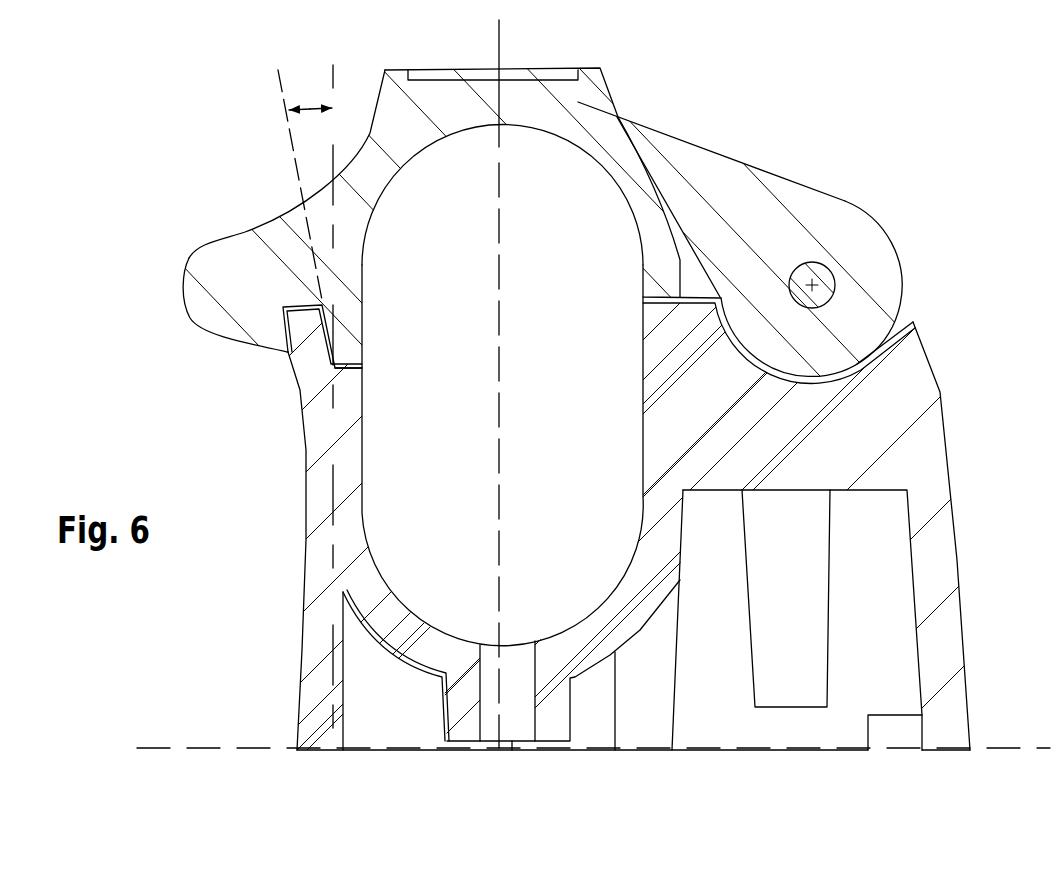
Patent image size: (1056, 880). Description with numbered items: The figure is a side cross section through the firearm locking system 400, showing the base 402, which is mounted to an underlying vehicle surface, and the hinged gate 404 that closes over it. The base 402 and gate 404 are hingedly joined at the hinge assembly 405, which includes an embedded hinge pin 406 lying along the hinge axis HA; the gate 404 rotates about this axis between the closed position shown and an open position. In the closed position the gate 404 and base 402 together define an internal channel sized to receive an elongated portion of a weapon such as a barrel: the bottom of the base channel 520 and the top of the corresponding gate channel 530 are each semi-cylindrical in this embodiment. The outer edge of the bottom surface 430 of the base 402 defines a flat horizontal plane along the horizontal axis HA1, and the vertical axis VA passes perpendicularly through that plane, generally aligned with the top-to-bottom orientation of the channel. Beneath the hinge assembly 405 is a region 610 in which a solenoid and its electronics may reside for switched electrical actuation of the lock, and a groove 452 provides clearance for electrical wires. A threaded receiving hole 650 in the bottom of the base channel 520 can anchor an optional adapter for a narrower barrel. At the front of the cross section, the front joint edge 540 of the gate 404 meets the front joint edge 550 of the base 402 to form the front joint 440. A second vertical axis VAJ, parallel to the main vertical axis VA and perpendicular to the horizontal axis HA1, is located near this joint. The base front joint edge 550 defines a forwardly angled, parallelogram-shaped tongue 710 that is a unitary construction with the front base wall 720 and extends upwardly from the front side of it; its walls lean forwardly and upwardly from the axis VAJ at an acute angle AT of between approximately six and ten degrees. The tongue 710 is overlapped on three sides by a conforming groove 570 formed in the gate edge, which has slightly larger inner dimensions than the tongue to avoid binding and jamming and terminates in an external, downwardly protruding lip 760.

The firearm locking system 400 is at (557, 440).
The base 402 is at (528, 491).
The hinged gate 404 is at (623, 104).
The hinge assembly 405 is at (861, 263).
The hinge pin 406 is at (838, 310).
The bottom surface 430 is at (691, 753).
The front opening joint 440 is at (366, 368).
The groove 452 is at (899, 738).
The base channel 520 is at (441, 620).
The gate channel 530 is at (423, 142).
The front joint edge of the gate 540 is at (366, 330).
The front joint edge of the base 550 is at (291, 383).
The groove 570 is at (297, 302).
The region 610 is at (848, 693).
The threaded receiving hole 650 is at (523, 643).
The tongue 710 is at (303, 357).
The front base wall 720 is at (305, 626).
The lip 760 is at (236, 341).
The hinge axis HA is at (815, 283).
The vertical axis VA is at (501, 30).
The vertical axis VAJ is at (338, 74).
The acute angle AT is at (308, 108).
The horizontal axis HA1 is at (200, 747).